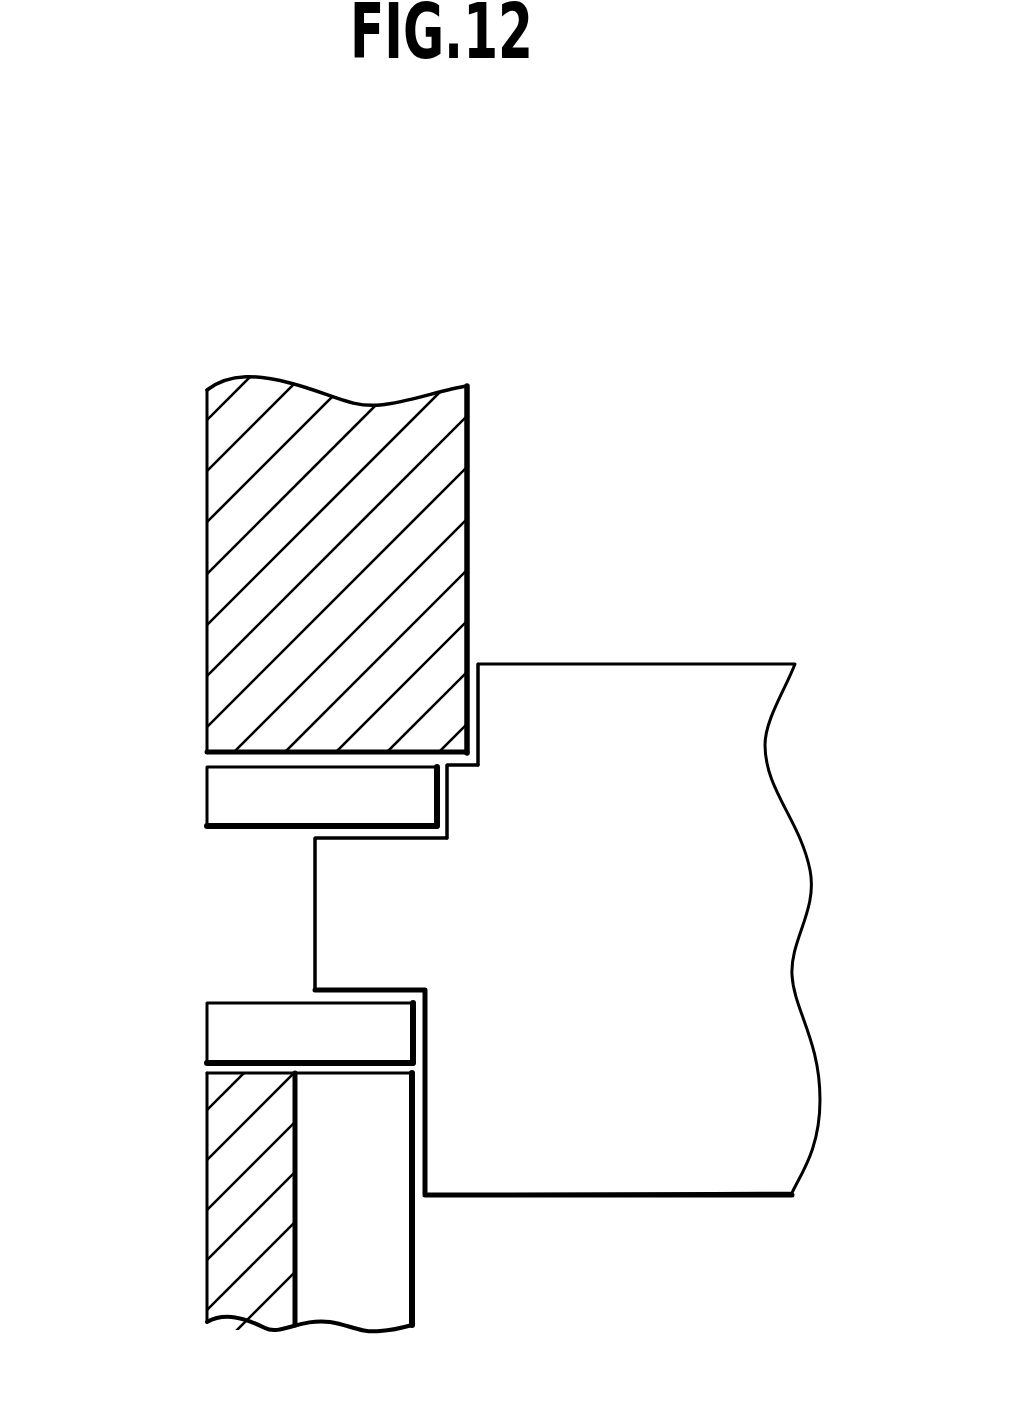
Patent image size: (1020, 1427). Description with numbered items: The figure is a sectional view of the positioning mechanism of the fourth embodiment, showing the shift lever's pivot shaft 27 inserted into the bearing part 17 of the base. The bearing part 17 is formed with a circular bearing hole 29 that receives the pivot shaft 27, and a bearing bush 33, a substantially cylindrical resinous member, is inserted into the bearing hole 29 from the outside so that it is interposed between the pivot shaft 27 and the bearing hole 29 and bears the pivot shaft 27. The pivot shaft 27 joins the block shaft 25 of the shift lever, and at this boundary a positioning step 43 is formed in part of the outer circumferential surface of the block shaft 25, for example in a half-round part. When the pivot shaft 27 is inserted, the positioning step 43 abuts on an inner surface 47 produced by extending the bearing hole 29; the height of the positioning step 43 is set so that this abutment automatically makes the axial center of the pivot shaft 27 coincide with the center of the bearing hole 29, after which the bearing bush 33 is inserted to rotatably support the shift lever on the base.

The bearing part 17 is at (457, 452).
The block shaft 25 is at (713, 677).
The pivot shaft 27 is at (338, 930).
The bearing hole 29 is at (278, 1073).
The bearing bush 33 is at (223, 792).
The positioning step 43 is at (473, 757).
The inner surface 47 is at (447, 778).